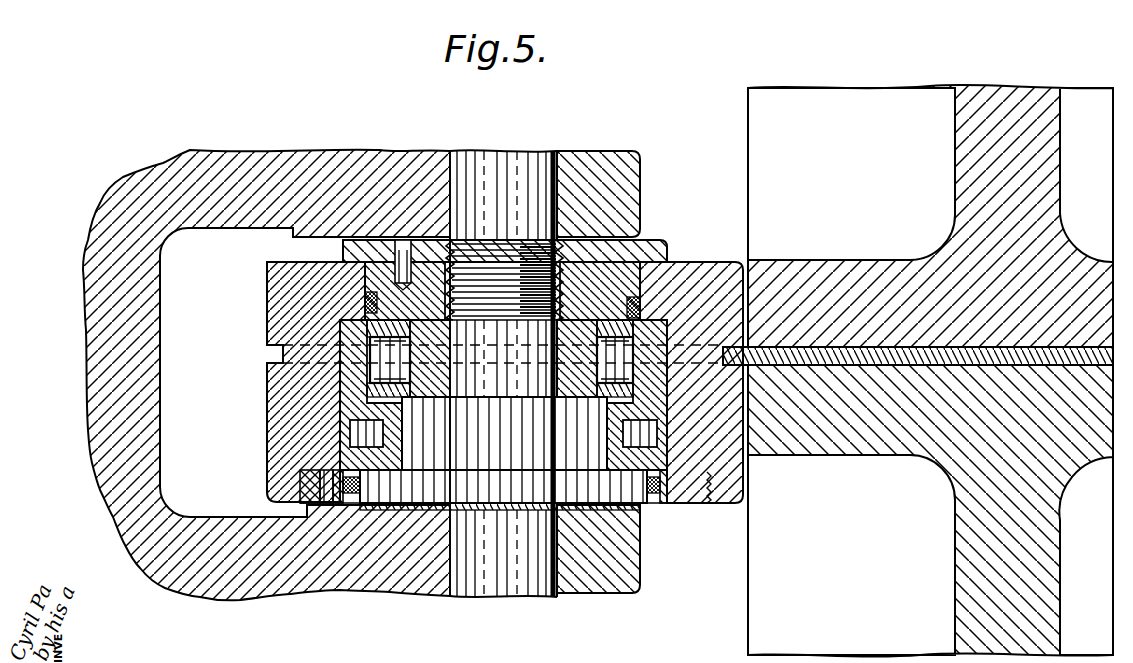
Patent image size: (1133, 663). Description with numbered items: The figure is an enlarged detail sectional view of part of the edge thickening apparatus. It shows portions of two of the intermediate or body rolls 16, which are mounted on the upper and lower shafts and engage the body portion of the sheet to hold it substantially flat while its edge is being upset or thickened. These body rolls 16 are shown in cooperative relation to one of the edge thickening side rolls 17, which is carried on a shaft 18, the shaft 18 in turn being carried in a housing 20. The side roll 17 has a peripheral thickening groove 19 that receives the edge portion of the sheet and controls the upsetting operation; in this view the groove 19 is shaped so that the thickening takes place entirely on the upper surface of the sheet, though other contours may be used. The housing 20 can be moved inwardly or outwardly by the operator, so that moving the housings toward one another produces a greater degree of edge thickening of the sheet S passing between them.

The intermediate rollers 16 is at (826, 269).
The side rolls 17 is at (684, 271).
The shaft 18 is at (505, 143).
The peripheral thickening groove 19 is at (283, 354).
The housing 20 is at (110, 352).
The sheet / plate S is at (898, 368).